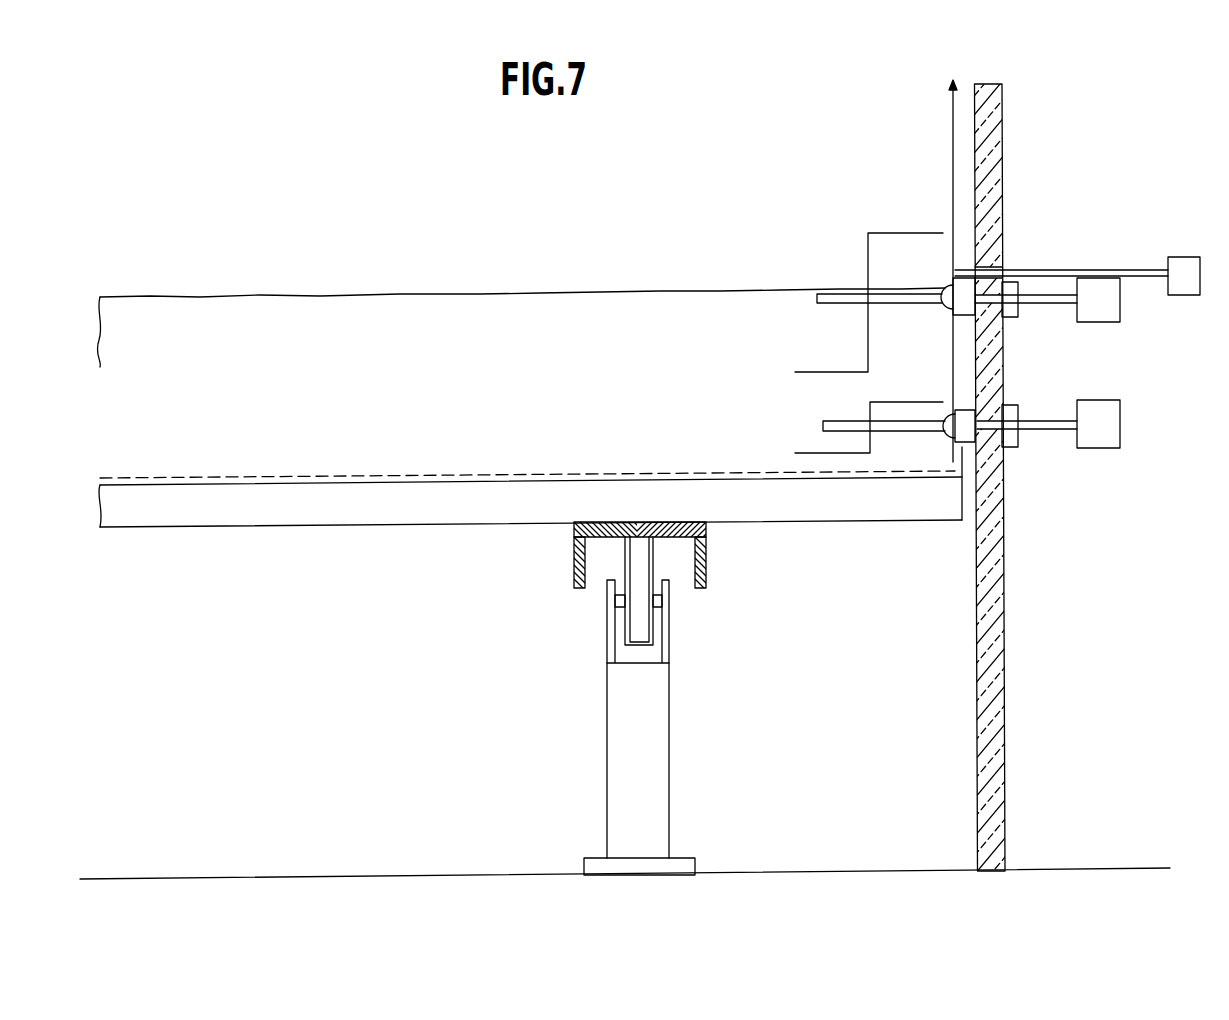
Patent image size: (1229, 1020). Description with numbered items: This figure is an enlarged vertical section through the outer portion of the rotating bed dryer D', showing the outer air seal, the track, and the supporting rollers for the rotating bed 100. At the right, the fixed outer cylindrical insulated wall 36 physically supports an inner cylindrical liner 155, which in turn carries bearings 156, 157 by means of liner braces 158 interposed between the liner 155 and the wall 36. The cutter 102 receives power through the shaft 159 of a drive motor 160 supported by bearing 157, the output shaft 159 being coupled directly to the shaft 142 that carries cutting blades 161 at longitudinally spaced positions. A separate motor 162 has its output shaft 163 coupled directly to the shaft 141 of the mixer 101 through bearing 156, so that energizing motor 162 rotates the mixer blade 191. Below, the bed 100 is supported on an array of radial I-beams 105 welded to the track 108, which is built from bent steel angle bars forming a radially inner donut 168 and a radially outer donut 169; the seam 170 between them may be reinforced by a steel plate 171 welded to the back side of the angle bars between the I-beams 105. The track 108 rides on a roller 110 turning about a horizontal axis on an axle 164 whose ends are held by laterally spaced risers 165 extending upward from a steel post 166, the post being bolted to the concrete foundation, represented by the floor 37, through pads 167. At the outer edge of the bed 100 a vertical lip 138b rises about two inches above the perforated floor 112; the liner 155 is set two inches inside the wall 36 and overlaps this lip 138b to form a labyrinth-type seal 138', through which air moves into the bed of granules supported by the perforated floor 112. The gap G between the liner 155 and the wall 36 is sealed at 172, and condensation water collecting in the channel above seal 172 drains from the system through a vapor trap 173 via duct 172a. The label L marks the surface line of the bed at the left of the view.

The outer cylindrical insulated wall 36 is at (995, 104).
The floor 37 is at (785, 873).
The rotating bed 100 is at (456, 367).
The mixer 101 is at (858, 241).
The cutter 102 is at (816, 408).
The radial I-beams 105 is at (388, 513).
The track 108 is at (631, 560).
The roller 110 is at (630, 617).
The perforated floor 112 is at (303, 478).
The labyrinth-type seal 138' is at (923, 514).
The vertical lip 138b is at (963, 452).
The shaft 141 is at (833, 298).
The shaft 142 is at (860, 418).
The inner cylindrical liner 155 is at (950, 107).
The bearing 156 is at (948, 313).
The bearing 157 is at (943, 437).
The liner braces 158 is at (960, 322).
The shaft 159 is at (1058, 433).
The drive motor 160 is at (1122, 428).
The cutting blades 161 is at (860, 455).
The motor 162 is at (1120, 307).
The output shaft 163 is at (1055, 310).
The axle 164 is at (622, 597).
The risers 165 is at (610, 643).
The steel post 166 is at (648, 732).
The pads 167 is at (665, 867).
The inner donut 168 is at (575, 550).
The outer donut 169 is at (703, 570).
The seam 170 is at (637, 525).
The steel plate 171 is at (714, 524).
The seal 172 is at (955, 270).
The duct 172a is at (1010, 270).
The vapor trap 173 is at (1182, 272).
The mixer blade 191 is at (900, 233).
The gap G is at (965, 179).
The glass surface line L is at (493, 293).
The rotating bed dryer D' is at (1163, 70).